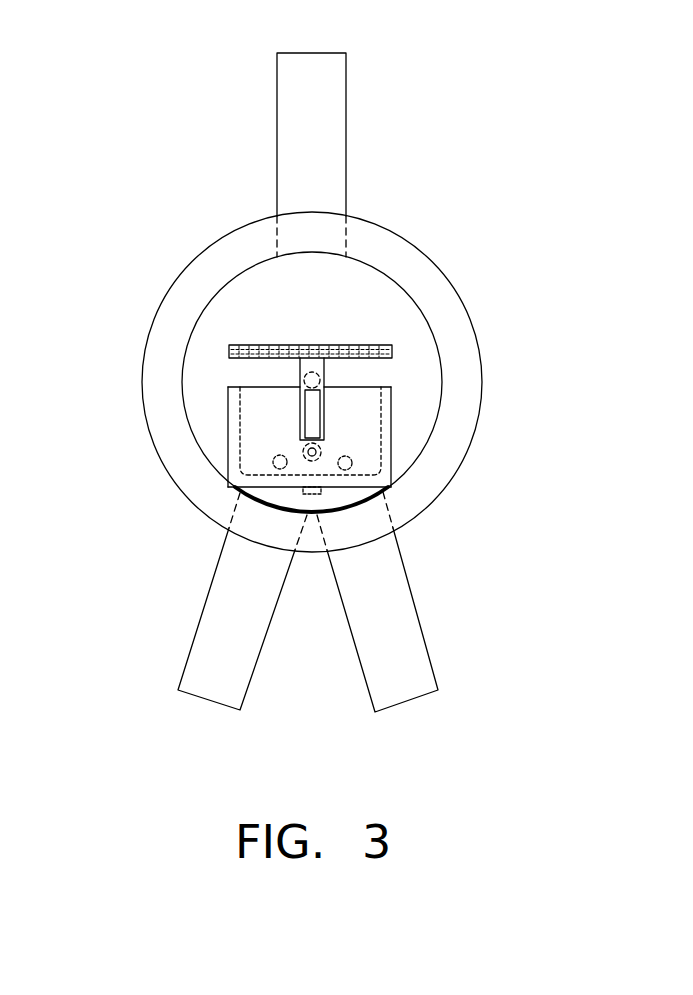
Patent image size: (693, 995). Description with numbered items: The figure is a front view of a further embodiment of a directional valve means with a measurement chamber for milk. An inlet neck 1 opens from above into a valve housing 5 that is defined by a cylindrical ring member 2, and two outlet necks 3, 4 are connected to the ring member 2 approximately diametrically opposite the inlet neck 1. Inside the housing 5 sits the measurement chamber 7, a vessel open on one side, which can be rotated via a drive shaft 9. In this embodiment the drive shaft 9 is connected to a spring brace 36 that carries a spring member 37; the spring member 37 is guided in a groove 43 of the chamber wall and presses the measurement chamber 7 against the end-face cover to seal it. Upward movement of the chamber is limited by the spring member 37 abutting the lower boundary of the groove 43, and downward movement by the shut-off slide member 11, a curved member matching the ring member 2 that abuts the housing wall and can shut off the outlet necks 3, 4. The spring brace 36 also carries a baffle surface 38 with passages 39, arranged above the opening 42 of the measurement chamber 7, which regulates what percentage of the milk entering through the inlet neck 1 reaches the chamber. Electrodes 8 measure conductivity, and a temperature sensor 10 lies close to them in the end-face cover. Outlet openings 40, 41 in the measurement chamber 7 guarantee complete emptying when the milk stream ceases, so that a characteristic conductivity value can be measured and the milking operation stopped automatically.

The inlet neck 1 is at (333, 68).
The cylindrical ring member 2 is at (403, 260).
The outlet neck 3 is at (417, 667).
The outlet neck 4 is at (217, 672).
The valve housing 5 is at (232, 253).
The measurement chamber 7 is at (228, 413).
The electrodes 8 is at (278, 462).
The drive shaft 9 is at (289, 387).
The temperature sensor 10 is at (302, 455).
The shut-off slide member 11 is at (340, 497).
The spring brace 36 is at (324, 368).
The spring member 37 is at (320, 427).
The baffle surface 38 is at (285, 345).
The passages 39 is at (342, 345).
The outlet opening 40 is at (230, 485).
The outlet opening 41 is at (390, 485).
The opening of the measurement chamber 42 is at (365, 388).
The groove 43 is at (323, 446).